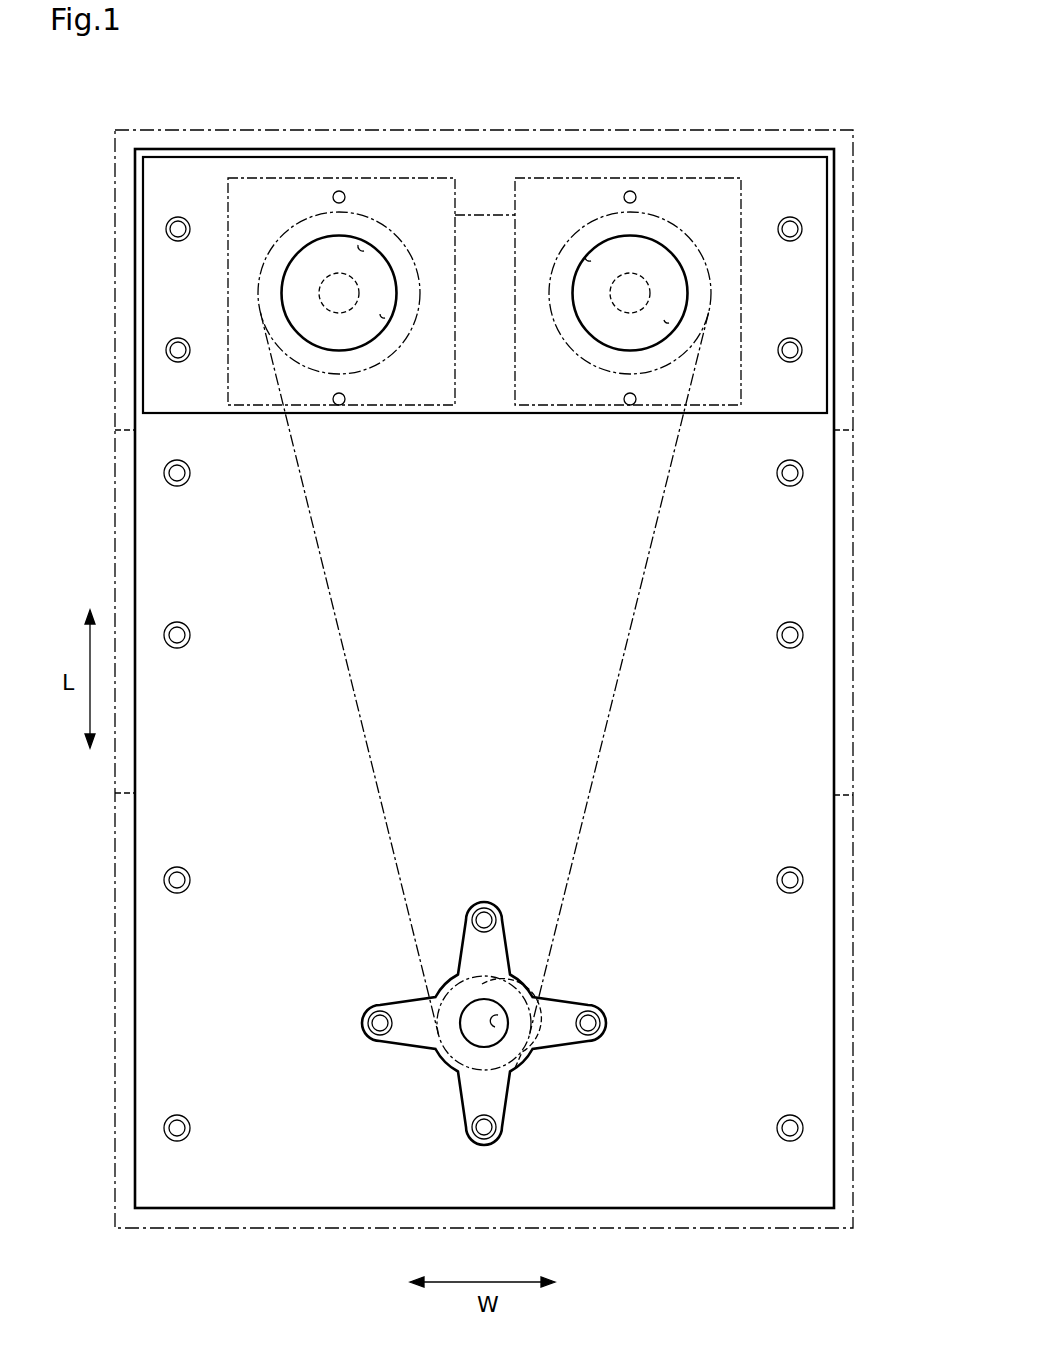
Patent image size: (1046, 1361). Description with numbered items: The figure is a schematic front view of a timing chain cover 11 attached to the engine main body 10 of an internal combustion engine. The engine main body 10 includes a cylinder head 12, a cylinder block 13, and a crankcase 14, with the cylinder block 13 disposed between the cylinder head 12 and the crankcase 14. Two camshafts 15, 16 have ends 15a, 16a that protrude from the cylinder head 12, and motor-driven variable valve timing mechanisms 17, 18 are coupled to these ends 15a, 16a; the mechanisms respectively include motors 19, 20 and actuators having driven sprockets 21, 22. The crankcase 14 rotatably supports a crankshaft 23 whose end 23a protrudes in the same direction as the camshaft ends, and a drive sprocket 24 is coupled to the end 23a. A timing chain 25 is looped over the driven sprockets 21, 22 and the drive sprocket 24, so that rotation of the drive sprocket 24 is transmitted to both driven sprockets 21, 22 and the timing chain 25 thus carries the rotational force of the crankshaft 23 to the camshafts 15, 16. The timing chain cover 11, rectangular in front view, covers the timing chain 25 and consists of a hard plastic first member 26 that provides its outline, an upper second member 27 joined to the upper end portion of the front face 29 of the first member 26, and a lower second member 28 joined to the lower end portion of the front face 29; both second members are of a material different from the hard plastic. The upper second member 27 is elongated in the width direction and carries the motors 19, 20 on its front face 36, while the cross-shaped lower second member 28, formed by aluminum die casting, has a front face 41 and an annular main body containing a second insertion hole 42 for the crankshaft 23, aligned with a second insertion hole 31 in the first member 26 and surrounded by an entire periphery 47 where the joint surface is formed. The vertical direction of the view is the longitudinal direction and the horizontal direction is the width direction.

The engine main body 10 is at (840, 130).
The timing chain cover 11 is at (650, 149).
The cylinder head 12 is at (855, 285).
The cylinder block 13 is at (855, 620).
The crankcase 14 is at (855, 972).
The end of camshaft 15a is at (286, 267).
The camshaft 15 is at (286, 267).
The end of camshaft 16a is at (681, 267).
The camshaft 16 is at (685, 270).
The variable valve timing mechanism 17 is at (371, 262).
The variable valve timing mechanism 18 is at (628, 257).
The motor 19 is at (371, 262).
The motor 20 is at (628, 257).
The driven sprocket 21 is at (378, 362).
The driven sprocket 22 is at (560, 347).
The end of crankshaft 23a is at (564, 1015).
The crankshaft 23 is at (520, 984).
The drive sprocket 24 is at (524, 1062).
The timing chain 25 is at (598, 758).
The first member 26 is at (835, 525).
The upper second member 27 is at (478, 414).
The lower second member 28 is at (437, 1058).
The front face 29 is at (812, 750).
The second insertion hole 31 is at (518, 1050).
The front face 36 is at (818, 375).
The front face 41 is at (495, 955).
The second insertion hole 42 is at (473, 1037).
The periphery 47 is at (463, 1000).